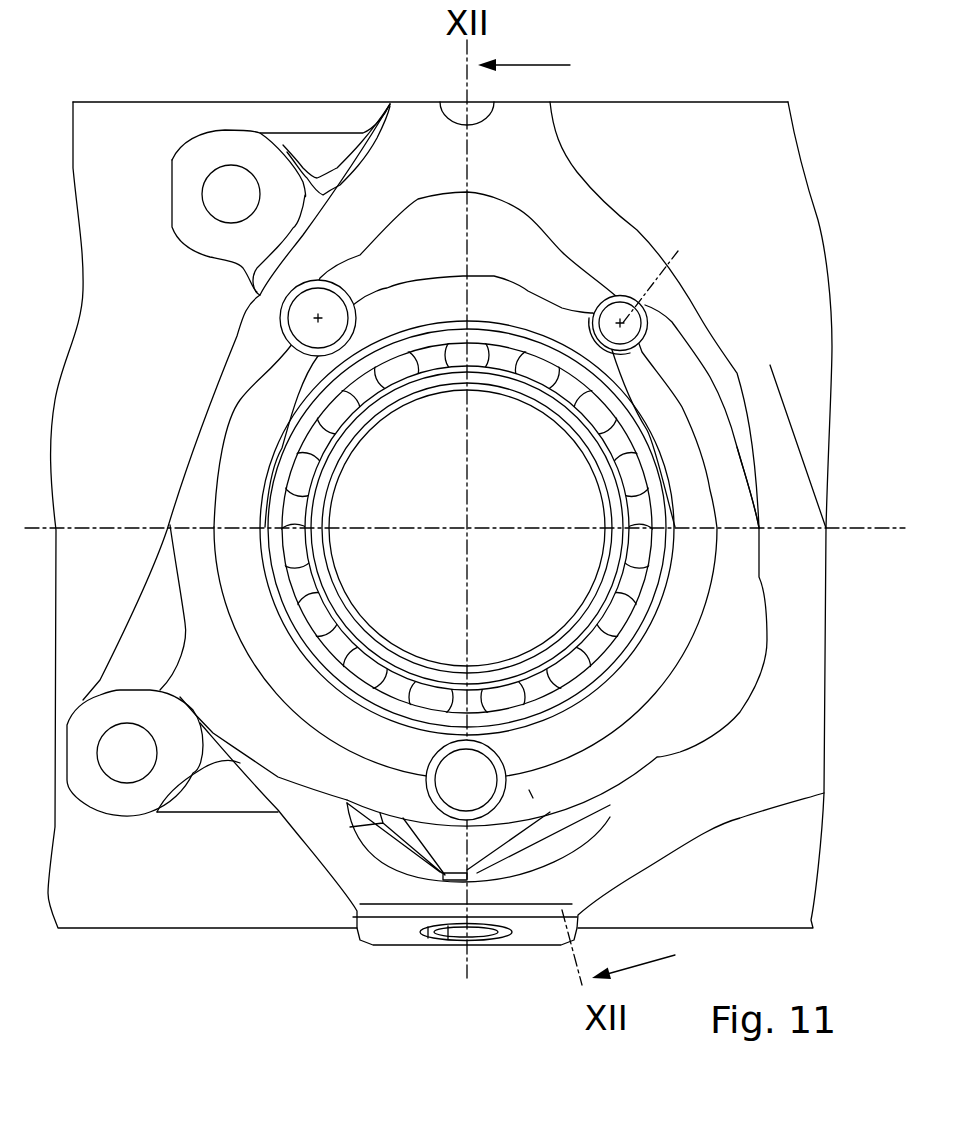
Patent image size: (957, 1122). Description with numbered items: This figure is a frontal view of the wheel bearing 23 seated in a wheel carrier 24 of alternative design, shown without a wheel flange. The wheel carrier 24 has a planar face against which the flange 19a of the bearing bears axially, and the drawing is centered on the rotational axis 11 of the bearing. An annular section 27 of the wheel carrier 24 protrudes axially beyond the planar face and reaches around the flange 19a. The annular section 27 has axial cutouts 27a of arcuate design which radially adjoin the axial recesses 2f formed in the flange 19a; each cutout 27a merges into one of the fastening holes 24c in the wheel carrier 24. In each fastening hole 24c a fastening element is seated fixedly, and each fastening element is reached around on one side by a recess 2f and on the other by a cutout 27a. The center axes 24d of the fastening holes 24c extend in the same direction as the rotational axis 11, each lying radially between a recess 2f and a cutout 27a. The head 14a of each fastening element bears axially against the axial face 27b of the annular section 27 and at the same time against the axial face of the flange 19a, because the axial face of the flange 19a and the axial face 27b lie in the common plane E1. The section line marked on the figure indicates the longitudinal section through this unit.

The rotational axis 11 is at (468, 528).
The head 14a is at (307, 302).
The recess 2f is at (565, 318).
The flange 19a is at (670, 418).
The wheel bearing 23 is at (588, 572).
The wheel carrier 24 is at (550, 168).
The fastening holes 24c is at (620, 300).
The center axes 24d is at (669, 274).
The annular section 27 is at (779, 429).
The axial cutouts 27a is at (645, 317).
The axial face 27b is at (731, 450).
The common plane E1 is at (703, 102).